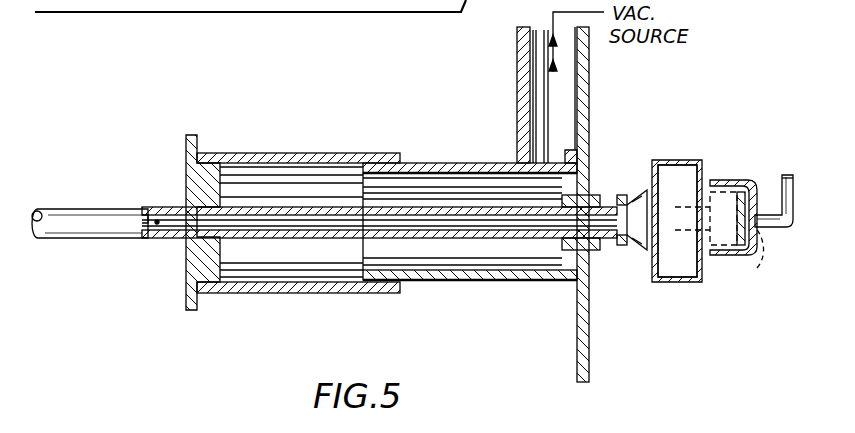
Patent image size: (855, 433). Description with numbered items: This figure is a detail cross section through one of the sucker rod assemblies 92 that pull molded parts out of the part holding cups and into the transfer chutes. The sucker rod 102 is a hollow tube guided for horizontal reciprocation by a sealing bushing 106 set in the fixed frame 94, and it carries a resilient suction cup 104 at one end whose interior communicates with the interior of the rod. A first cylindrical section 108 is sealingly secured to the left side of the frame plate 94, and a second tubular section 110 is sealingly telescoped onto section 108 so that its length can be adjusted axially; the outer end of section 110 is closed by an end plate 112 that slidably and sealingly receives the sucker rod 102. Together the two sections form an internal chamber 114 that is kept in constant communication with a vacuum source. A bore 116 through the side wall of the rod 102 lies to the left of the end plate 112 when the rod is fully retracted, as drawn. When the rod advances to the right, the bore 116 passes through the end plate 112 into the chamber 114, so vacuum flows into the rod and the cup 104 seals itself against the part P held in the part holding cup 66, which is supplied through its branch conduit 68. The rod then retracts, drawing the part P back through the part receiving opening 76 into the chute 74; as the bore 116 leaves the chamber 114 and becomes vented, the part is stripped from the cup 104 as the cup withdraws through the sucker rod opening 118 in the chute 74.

The part holding cup 66 is at (753, 181).
The branch conduit 68 is at (796, 200).
The transfer chute 74 is at (676, 282).
The part receiving opening 76 is at (704, 190).
The sucker rod assembly 92 is at (192, 312).
The fixed frame 94 is at (590, 102).
The sucker rod 102 is at (70, 212).
The suction cup 104 is at (635, 250).
The sealing bushing 106 is at (600, 196).
The first cylindrical section 108 is at (493, 282).
The second tubular section 110 is at (304, 293).
The end plate 112 is at (186, 185).
The internal chamber 114 is at (398, 201).
The bore 116 is at (157, 222).
The sucker rod opening 118 is at (660, 192).
The part P is at (710, 256).